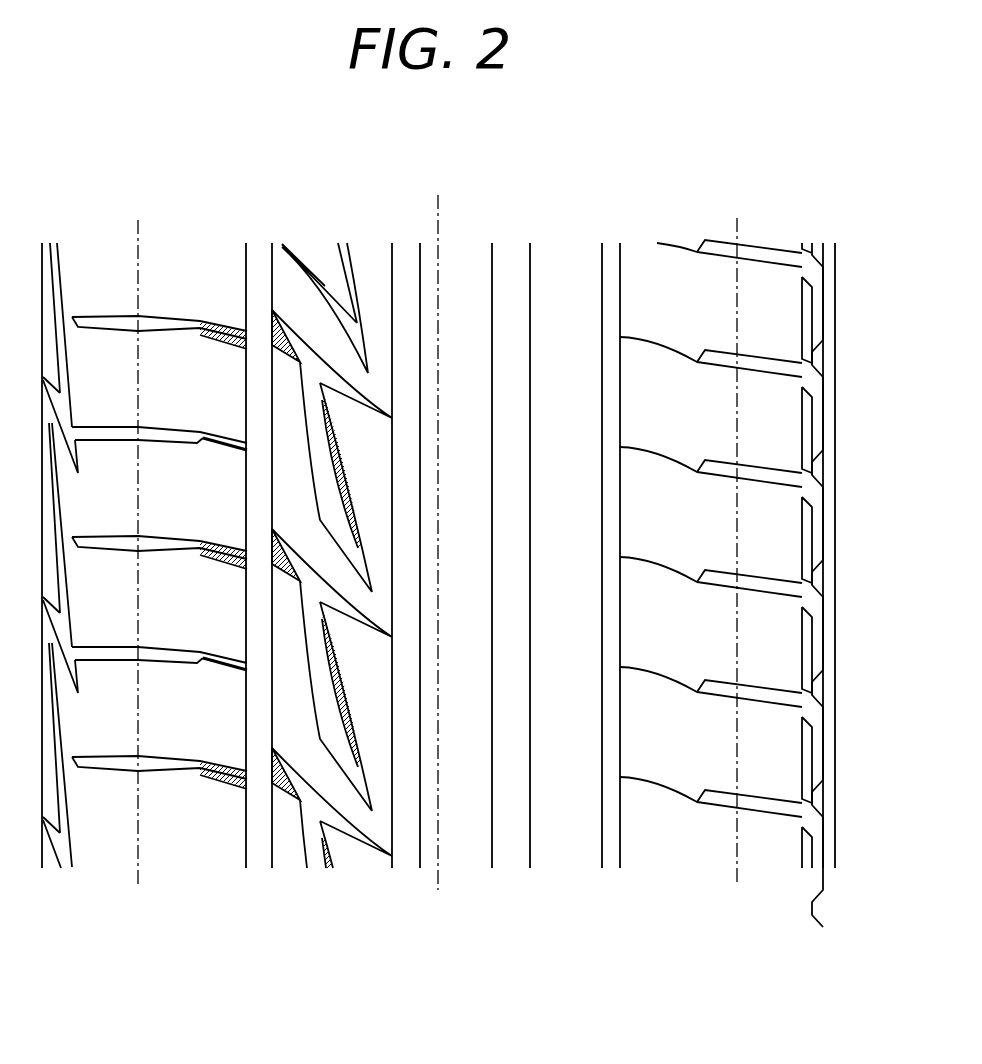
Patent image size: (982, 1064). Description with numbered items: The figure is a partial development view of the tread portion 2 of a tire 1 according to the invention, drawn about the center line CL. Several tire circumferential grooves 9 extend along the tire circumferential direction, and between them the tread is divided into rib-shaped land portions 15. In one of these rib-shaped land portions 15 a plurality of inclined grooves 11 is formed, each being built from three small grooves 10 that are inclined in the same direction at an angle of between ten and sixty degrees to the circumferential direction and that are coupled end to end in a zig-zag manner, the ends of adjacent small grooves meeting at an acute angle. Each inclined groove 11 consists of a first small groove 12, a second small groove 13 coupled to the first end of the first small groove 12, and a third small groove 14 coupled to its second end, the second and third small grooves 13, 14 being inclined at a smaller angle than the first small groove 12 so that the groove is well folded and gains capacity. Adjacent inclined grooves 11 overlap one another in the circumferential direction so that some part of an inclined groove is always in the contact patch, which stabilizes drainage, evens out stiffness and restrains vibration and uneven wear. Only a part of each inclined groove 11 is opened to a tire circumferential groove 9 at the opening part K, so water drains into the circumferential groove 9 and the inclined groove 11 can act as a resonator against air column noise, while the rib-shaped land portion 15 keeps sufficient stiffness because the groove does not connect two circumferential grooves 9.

The tire 1 is at (793, 170).
The tread portion 2 is at (694, 224).
The tire circumferential groove 9 is at (256, 260).
The small groove 10 is at (325, 290).
The inclined groove 11 is at (441, 670).
The first small groove 12 is at (345, 668).
The second small groove 13 is at (350, 606).
The third small groove 14 is at (360, 760).
The rib-shaped land portion 15 is at (348, 872).
The opening part K is at (272, 310).
The tire equatorial center line CL is at (437, 529).